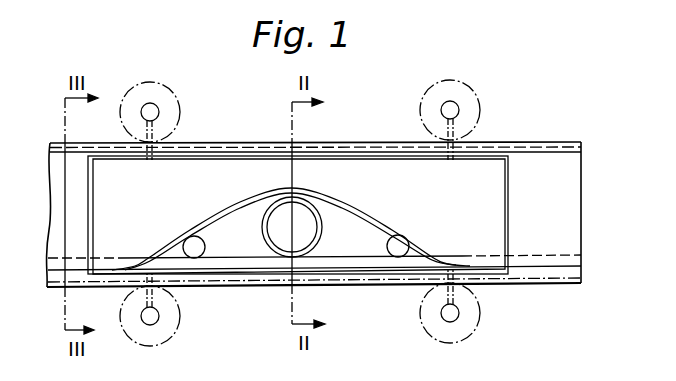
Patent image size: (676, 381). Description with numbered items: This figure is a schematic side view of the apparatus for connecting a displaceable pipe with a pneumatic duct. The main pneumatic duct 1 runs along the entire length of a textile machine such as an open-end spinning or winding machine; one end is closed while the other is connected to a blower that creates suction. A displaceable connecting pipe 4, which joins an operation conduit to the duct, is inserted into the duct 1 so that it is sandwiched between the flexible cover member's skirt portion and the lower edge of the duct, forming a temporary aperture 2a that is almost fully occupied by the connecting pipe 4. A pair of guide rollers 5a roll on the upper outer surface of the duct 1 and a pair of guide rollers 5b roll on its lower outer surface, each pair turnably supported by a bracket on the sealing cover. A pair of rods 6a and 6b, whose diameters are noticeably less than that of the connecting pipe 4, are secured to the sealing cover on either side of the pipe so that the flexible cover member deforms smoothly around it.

The main pneumatic duct 1 is at (568, 284).
The temporary aperture 2a is at (247, 250).
The displaceable connecting pipe 4 is at (322, 226).
The guide rollers 5a is at (157, 94).
The guide rollers 5b is at (139, 336).
The rod 6a is at (194, 250).
The rod 6b is at (397, 250).